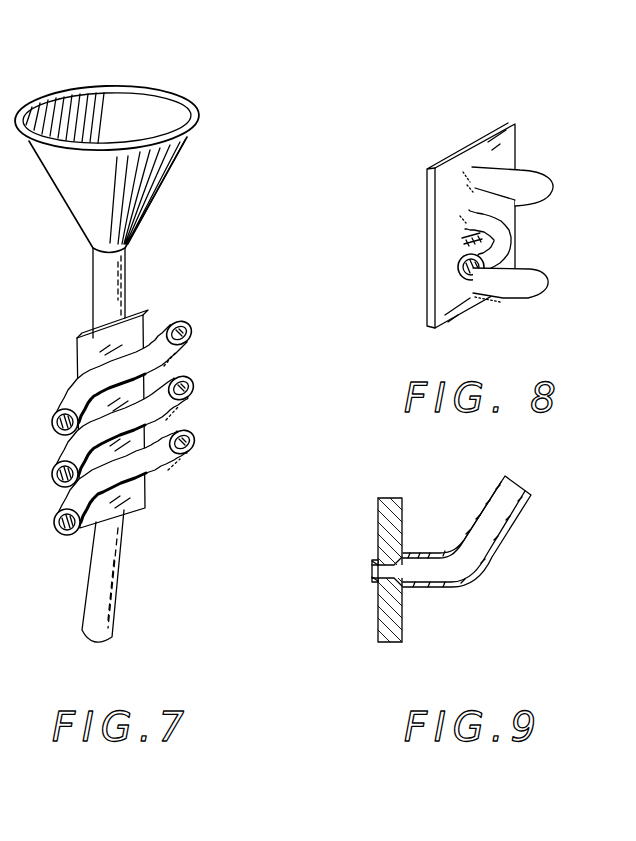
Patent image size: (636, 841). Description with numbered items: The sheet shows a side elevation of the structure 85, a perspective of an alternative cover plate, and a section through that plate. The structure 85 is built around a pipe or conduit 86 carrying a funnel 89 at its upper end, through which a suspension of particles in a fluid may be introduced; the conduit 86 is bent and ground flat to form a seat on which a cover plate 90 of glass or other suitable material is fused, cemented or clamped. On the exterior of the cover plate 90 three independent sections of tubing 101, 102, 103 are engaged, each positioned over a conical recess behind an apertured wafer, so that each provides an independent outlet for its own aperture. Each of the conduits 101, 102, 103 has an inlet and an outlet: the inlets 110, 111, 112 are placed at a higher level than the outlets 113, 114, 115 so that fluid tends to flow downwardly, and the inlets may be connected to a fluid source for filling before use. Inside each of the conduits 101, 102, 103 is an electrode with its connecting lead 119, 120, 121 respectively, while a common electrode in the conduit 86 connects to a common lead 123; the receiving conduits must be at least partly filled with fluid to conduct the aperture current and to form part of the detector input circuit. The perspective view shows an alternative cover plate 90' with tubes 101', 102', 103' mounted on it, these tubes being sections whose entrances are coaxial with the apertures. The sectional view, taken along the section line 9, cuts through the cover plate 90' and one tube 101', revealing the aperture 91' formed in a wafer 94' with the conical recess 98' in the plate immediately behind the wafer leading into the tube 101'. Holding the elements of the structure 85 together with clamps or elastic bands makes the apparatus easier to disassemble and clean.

In FIG. 7, the structure 85 is at (62, 328).
In FIG. 7, the pipe or conduit 86 is at (103, 570).
In FIG. 7, the funnel 89 is at (152, 178).
In FIG. 7, the cover plate 90 is at (129, 404).
In FIG. 7, the section of tubing 101 is at (97, 376).
In FIG. 7, the section of tubing 102 is at (95, 428).
In FIG. 7, the section of tubing 103 is at (96, 479).
In FIG. 7, the inlet 110 is at (189, 325).
In FIG. 7, the inlet 111 is at (193, 385).
In FIG. 7, the inlet 112 is at (194, 443).
In FIG. 7, the outlet 113 is at (52, 422).
In FIG. 7, the outlet 114 is at (52, 475).
In FIG. 7, the outlet 115 is at (55, 527).
In FIG. 7, the connecting lead 119 is at (157, 358).
In FIG. 7, the connecting lead 120 is at (160, 412).
In FIG. 7, the connecting lead 121 is at (162, 465).
In FIG. 7, the common lead 123 is at (100, 293).
In FIG. 8, the cover plate 90' is at (471, 214).
In FIG. 9, the cover plate 90' is at (413, 556).
In FIG. 8, the tube 101' is at (529, 194).
In FIG. 9, the tube 101' is at (478, 531).
In FIG. 8, the tube 102' is at (524, 245).
In FIG. 8, the tube 103' is at (531, 292).
In FIG. 8, the section line 9- 9 is at (543, 148).
In FIG. 9, the fastener 91' is at (341, 579).
In FIG. 9, the washer 94' is at (347, 558).
In FIG. 9, the aperture 98' is at (415, 550).